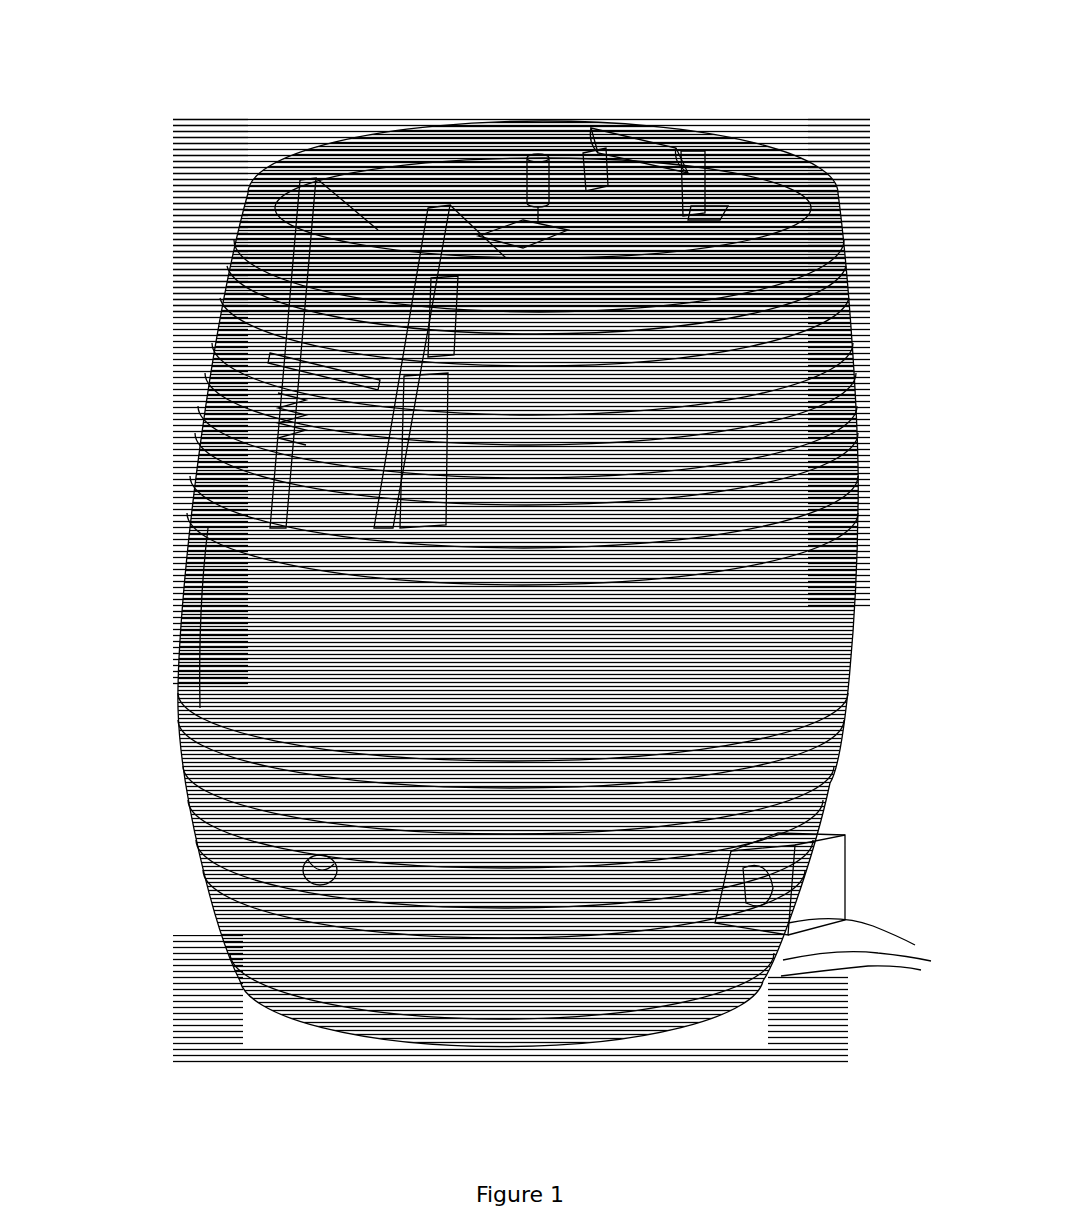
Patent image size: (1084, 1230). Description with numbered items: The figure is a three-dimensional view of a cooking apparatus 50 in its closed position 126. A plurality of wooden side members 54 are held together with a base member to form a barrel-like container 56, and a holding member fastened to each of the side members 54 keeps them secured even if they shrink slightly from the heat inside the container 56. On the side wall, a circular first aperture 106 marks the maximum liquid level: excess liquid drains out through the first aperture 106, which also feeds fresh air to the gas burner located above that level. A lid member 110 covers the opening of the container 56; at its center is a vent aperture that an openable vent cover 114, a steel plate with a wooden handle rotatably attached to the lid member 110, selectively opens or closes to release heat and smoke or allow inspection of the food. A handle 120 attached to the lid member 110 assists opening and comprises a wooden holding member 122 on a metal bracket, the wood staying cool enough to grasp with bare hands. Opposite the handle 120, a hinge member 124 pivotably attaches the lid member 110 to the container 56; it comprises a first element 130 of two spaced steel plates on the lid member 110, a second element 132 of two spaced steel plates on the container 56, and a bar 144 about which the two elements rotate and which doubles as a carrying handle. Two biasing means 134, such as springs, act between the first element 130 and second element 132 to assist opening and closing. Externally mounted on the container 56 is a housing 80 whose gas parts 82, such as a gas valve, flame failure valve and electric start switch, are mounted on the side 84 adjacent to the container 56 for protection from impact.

The cooking apparatus 50 is at (215, 88).
The wooden side members 54 is at (165, 600).
The container 56 is at (158, 682).
The housing 80 is at (840, 885).
The gas parts 82 is at (873, 951).
The side of the housing 84 is at (835, 776).
The first aperture 106 is at (185, 860).
The lid member 110 is at (820, 215).
The openable vent cover 114 is at (455, 118).
The handle 120 is at (705, 132).
The wooden holding member 122 is at (645, 118).
The hinge member 124 is at (217, 290).
The closed position 126 is at (866, 305).
The first element 130 is at (230, 240).
The second element 132 is at (193, 423).
The biasing means 134 is at (172, 505).
The bar 144 is at (160, 582).